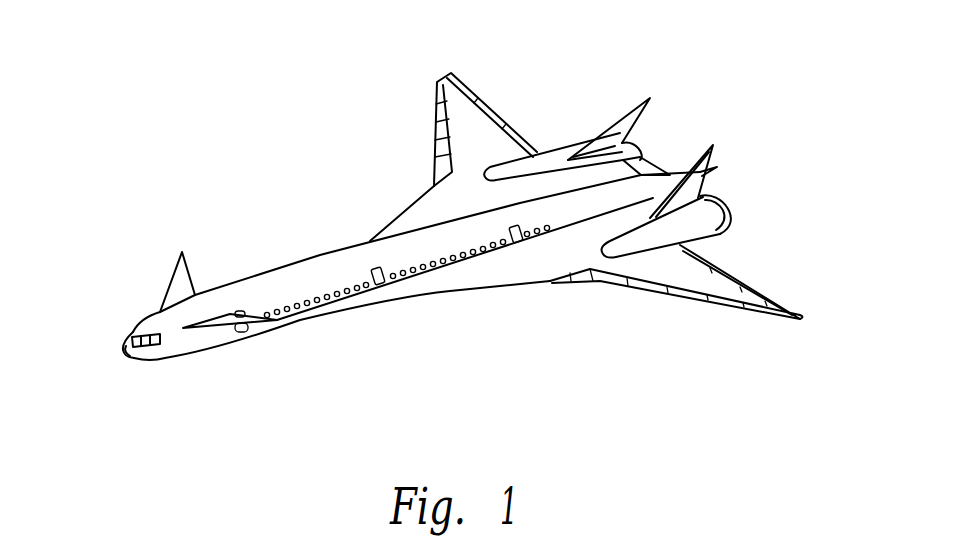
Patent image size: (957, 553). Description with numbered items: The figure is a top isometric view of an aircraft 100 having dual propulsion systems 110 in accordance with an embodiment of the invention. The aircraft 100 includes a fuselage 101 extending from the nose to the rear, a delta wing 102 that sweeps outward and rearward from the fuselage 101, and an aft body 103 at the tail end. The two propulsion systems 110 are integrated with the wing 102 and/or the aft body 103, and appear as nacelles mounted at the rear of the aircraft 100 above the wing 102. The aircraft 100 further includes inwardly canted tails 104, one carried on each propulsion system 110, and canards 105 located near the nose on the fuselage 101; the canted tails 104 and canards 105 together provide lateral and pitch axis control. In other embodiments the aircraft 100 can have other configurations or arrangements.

The aircraft 100 is at (413, 311).
The fuselage 101 is at (267, 272).
The wing 102 is at (577, 284).
The tail 103 is at (680, 137).
The vertical fin 104 is at (629, 97).
The canard 105 is at (167, 278).
The engine nacelle 110 is at (568, 132).